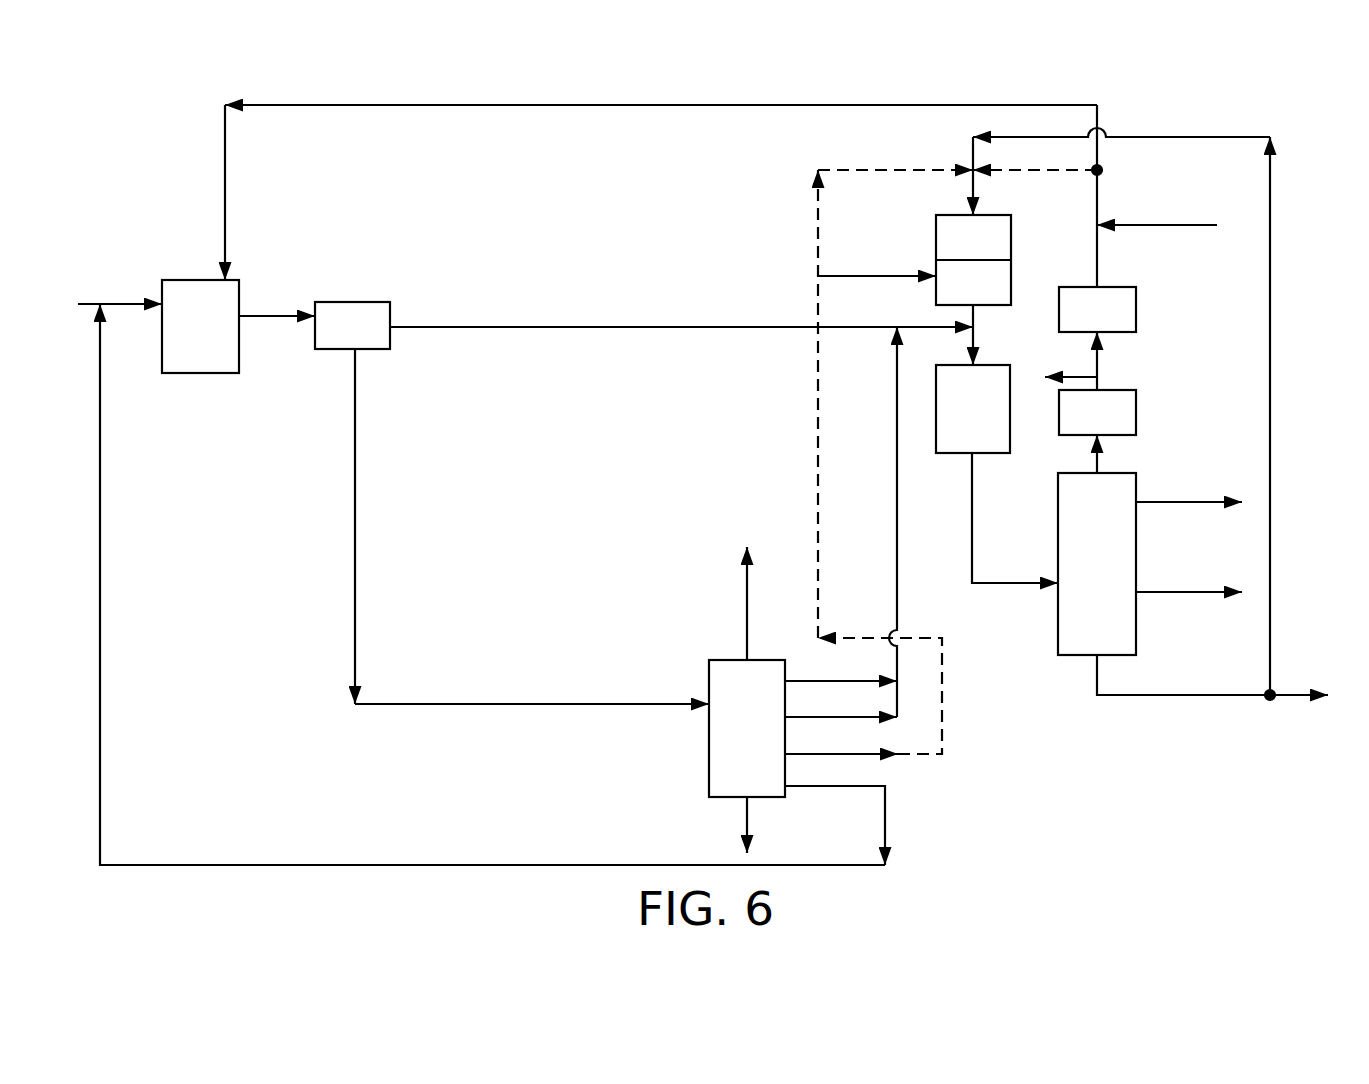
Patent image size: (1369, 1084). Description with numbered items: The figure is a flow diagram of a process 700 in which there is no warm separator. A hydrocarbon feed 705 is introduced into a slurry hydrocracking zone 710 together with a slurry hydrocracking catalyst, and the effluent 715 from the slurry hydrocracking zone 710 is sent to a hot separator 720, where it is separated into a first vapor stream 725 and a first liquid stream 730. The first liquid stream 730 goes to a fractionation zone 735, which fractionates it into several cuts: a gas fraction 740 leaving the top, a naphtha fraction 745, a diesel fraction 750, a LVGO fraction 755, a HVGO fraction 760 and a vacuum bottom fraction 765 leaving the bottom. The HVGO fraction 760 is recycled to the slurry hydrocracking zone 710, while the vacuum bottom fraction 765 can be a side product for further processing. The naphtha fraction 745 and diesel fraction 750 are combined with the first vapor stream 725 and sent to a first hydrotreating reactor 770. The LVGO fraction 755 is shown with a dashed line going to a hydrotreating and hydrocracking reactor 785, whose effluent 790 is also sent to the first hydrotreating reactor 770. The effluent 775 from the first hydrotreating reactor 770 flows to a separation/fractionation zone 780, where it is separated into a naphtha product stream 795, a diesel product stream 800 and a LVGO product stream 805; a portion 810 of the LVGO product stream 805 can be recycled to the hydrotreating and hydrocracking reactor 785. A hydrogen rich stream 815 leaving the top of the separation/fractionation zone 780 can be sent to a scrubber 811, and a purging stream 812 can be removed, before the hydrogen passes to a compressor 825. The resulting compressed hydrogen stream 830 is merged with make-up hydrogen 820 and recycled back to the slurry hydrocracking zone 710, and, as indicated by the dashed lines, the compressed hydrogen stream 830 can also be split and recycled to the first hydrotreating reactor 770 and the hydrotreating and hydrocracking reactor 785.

The process 700 is at (139, 117).
The hydrocarbon feed 705 is at (128, 302).
The slurry hydrocracking zone 710 is at (203, 374).
The effluent 715 is at (276, 311).
The hot separator 720 is at (354, 300).
The first vapor stream 725 is at (537, 325).
The first liquid stream 730 is at (354, 444).
The fractionation zone 735 is at (730, 660).
The gas fraction 740 is at (746, 592).
The naphtha fraction 745 is at (855, 680).
The diesel fraction 750 is at (857, 717).
The LVGO fraction 755 is at (852, 754).
The HVGO fraction 760 is at (886, 810).
The vacuum bottom fraction 765 is at (746, 824).
The first hydrotreating reactor 770 is at (988, 365).
The effluent 775 is at (971, 474).
The separation/fractionation zone 780 is at (1085, 473).
The hydrotreating and hydrocracking reactor 785 is at (1012, 287).
The effluent 790 is at (968, 316).
The naphtha product stream 795 is at (1212, 500).
The diesel product stream 800 is at (1184, 592).
The LVGO product stream 805 is at (1186, 696).
The portion of the LVGO product stream 810 is at (1272, 410).
The scrubber 811 is at (1137, 418).
The purging stream 812 is at (1085, 377).
The hydrogen rich stream 815 is at (1100, 467).
The make-up hydrogen 820 is at (1193, 225).
The compressor 825 is at (1123, 287).
The compressed hydrogen stream 830 is at (1100, 200).